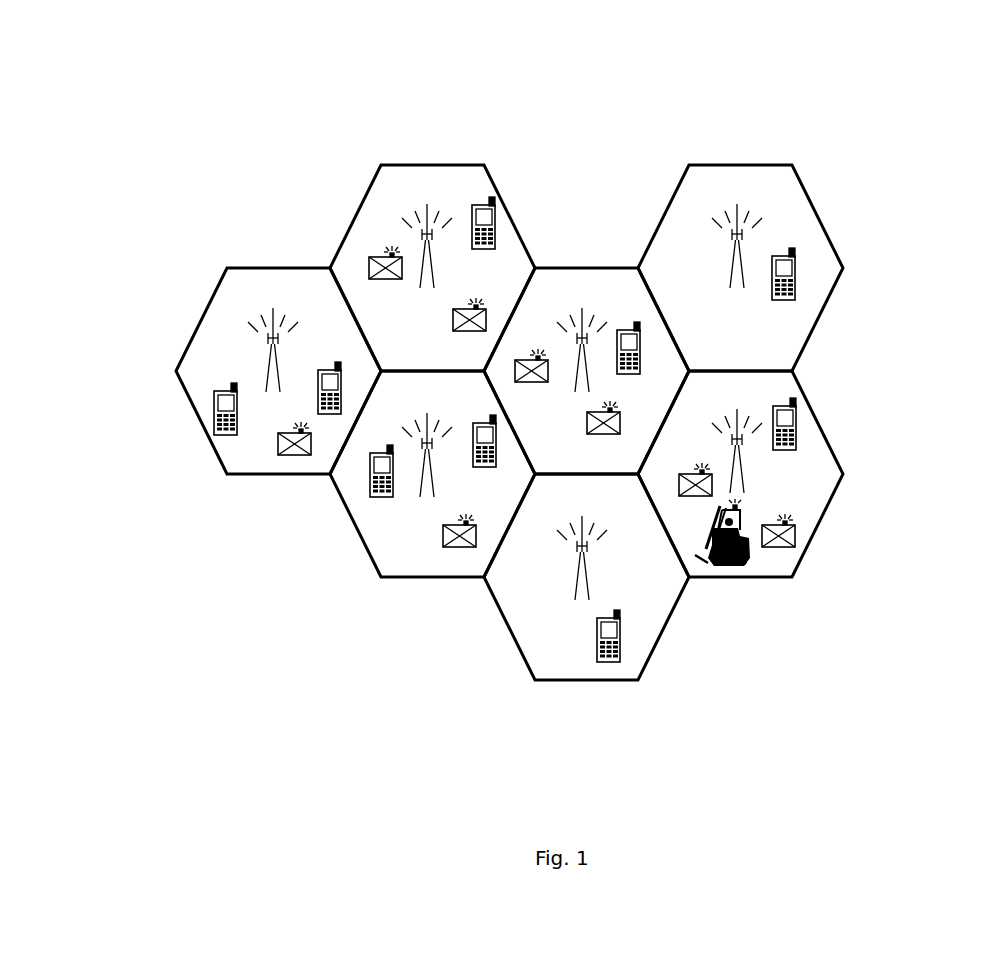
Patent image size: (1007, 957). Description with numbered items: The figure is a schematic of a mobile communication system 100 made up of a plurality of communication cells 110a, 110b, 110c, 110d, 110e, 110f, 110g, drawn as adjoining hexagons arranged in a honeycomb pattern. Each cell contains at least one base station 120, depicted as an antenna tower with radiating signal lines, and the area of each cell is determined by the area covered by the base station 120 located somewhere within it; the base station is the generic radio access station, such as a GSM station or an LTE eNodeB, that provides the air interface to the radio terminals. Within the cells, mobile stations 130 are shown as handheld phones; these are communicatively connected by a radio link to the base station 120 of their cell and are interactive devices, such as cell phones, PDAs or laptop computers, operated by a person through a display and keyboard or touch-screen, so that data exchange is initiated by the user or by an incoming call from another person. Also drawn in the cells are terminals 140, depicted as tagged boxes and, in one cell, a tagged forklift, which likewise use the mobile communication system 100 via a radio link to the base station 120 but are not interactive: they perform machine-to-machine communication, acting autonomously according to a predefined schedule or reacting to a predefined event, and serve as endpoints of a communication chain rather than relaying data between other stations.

The mobile communication system 100 is at (526, 118).
The communication cell 110a is at (192, 367).
The communication cell 110b is at (370, 227).
The communication cell 110c is at (382, 547).
The communication cell 110d is at (618, 288).
The communication cell 110e is at (527, 628).
The communication cell 110f is at (805, 207).
The communication cell 110g is at (825, 465).
The base station 120 is at (420, 227).
The mobile station 130 is at (217, 412).
The terminal 140 is at (368, 266).